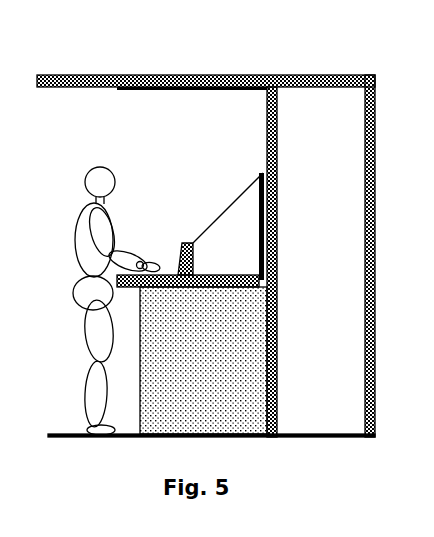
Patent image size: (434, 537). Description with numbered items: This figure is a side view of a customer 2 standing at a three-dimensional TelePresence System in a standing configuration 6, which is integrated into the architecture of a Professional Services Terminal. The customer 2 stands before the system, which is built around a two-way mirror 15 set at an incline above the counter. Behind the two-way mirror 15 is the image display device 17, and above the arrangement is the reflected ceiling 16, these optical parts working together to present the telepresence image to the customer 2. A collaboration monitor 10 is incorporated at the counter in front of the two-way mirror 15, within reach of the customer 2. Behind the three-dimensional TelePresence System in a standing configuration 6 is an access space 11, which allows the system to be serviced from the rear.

The customer 2 is at (75, 240).
The 3D TelePresence System in a standing configuration 6 is at (200, 327).
The collaboration monitor 10 is at (177, 258).
The access space 11 is at (327, 175).
The two-way mirror 15 is at (228, 205).
The reflected ceiling 16 is at (166, 91).
The image display device 17 is at (270, 240).